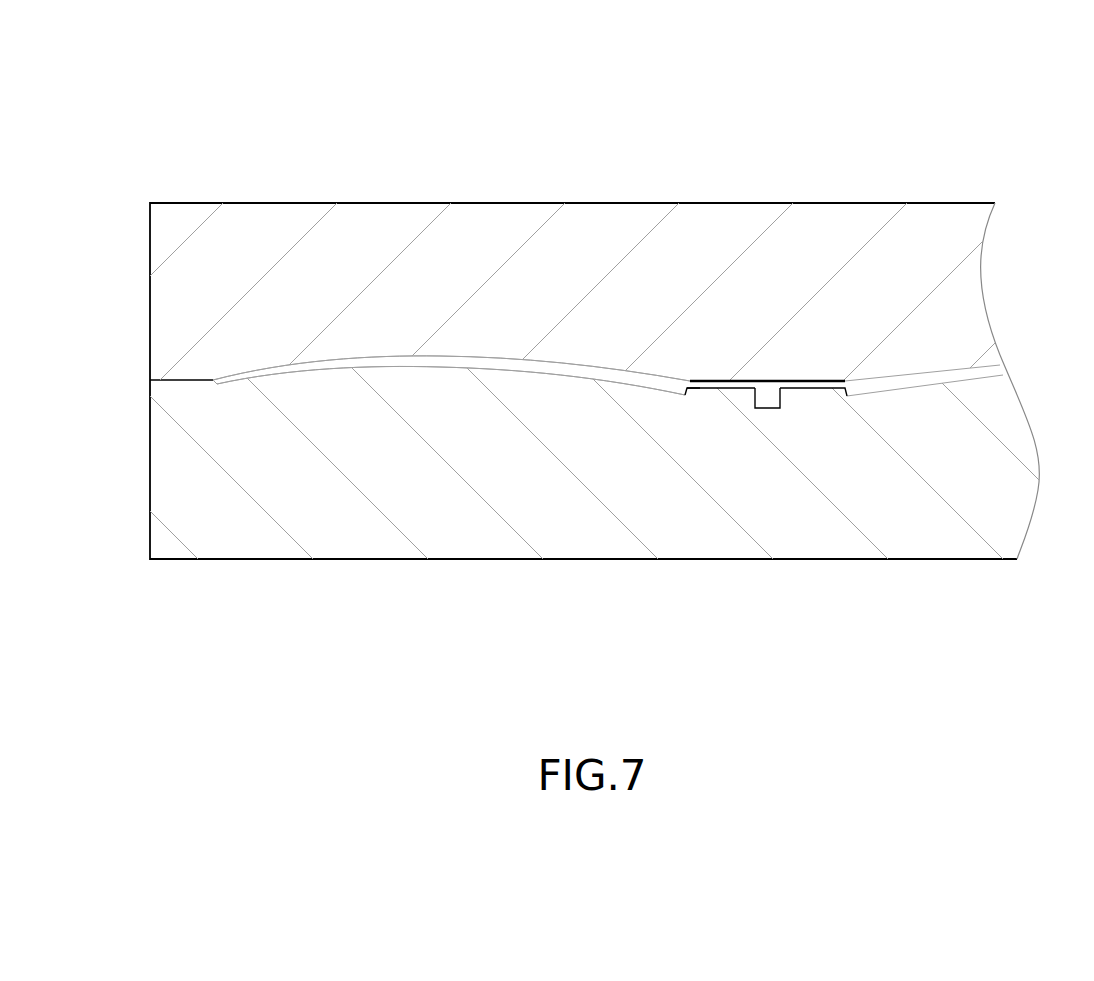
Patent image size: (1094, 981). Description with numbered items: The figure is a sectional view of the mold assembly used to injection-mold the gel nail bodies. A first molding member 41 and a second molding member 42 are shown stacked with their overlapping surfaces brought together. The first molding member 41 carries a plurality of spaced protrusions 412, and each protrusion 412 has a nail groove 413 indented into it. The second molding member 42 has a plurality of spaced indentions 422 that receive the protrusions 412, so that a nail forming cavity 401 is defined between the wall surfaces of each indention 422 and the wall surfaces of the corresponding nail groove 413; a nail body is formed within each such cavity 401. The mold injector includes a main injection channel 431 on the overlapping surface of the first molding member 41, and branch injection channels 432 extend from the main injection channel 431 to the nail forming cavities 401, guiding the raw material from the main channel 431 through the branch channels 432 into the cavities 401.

The first molding member 41 is at (217, 530).
The second molding member 42 is at (193, 235).
The nail forming cavity 401 is at (565, 347).
The protrusion 412 is at (451, 393).
The nail groove 413 is at (653, 411).
The indention 422 is at (392, 333).
The main injection channel 431 is at (774, 429).
The branch injection channel 432 is at (713, 409).